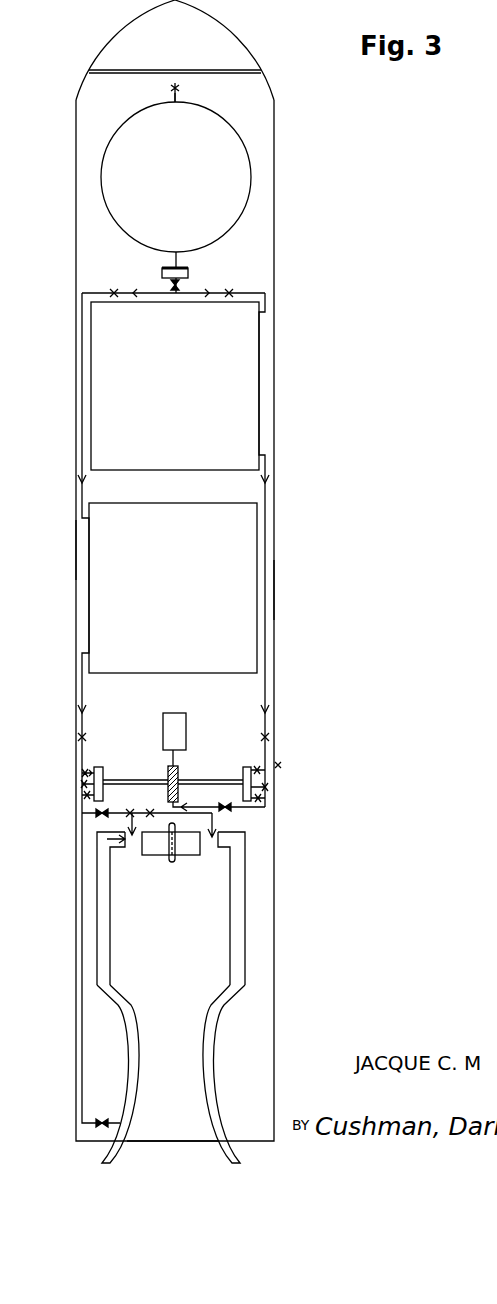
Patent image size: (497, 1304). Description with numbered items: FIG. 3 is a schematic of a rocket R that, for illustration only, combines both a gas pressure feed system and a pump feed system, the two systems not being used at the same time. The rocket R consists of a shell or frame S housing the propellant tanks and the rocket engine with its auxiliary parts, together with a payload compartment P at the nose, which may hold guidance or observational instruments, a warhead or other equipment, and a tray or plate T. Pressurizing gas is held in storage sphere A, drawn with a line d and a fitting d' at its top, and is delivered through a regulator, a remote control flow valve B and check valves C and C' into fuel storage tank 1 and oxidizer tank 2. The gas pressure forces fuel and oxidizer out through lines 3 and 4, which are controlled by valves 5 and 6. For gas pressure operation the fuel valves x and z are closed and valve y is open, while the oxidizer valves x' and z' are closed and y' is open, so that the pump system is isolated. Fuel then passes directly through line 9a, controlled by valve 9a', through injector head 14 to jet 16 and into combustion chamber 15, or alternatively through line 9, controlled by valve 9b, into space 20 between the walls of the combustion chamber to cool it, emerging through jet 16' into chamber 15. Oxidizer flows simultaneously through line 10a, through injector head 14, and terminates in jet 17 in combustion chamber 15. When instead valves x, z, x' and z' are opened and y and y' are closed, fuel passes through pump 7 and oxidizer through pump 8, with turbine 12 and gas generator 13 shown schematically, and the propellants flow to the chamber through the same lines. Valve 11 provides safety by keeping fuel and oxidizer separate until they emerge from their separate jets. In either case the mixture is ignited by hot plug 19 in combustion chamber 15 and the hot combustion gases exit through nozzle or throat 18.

The fuel storage tank 1 is at (173, 607).
The oxidizer tank 2 is at (175, 386).
The fuel line 3 is at (82, 687).
The oxidizer line 4 is at (266, 683).
The valve 5 is at (78, 737).
The valve 6 is at (268, 737).
The pump 7 is at (98, 767).
The pump 8 is at (246, 767).
The line 9 is at (80, 1027).
The line 9a is at (130, 803).
The valve 9a' is at (75, 835).
The valve 9b is at (98, 1128).
The line 10a is at (182, 807).
The valve 11 is at (151, 809).
The turbine 12 is at (178, 775).
The gas generator 13 is at (180, 726).
The injector head 14 is at (171, 843).
The combustion chamber 15 is at (171, 908).
The jet 16 is at (129, 876).
The jet 16' is at (127, 853).
The jet 17 is at (212, 848).
The nozzle or throat 18 is at (165, 1110).
The hot plug 19 is at (172, 863).
The space between the walls of the combustion chamber 20 is at (132, 1048).
The storage sphere A is at (176, 177).
The remote control flow valve B is at (182, 287).
The check valve C is at (85, 297).
The check valve C' is at (255, 289).
The payload compartment P is at (228, 46).
The tray or plate T is at (262, 72).
The rocket R is at (280, 391).
The side wall S is at (76, 546).
The conduit d is at (208, 101).
The valve d' is at (195, 90).
The fuel valve x is at (67, 773).
The valve y is at (67, 788).
The fuel valve z is at (68, 801).
The valve x' is at (276, 768).
The valve y' is at (277, 786).
The valve z' is at (277, 801).